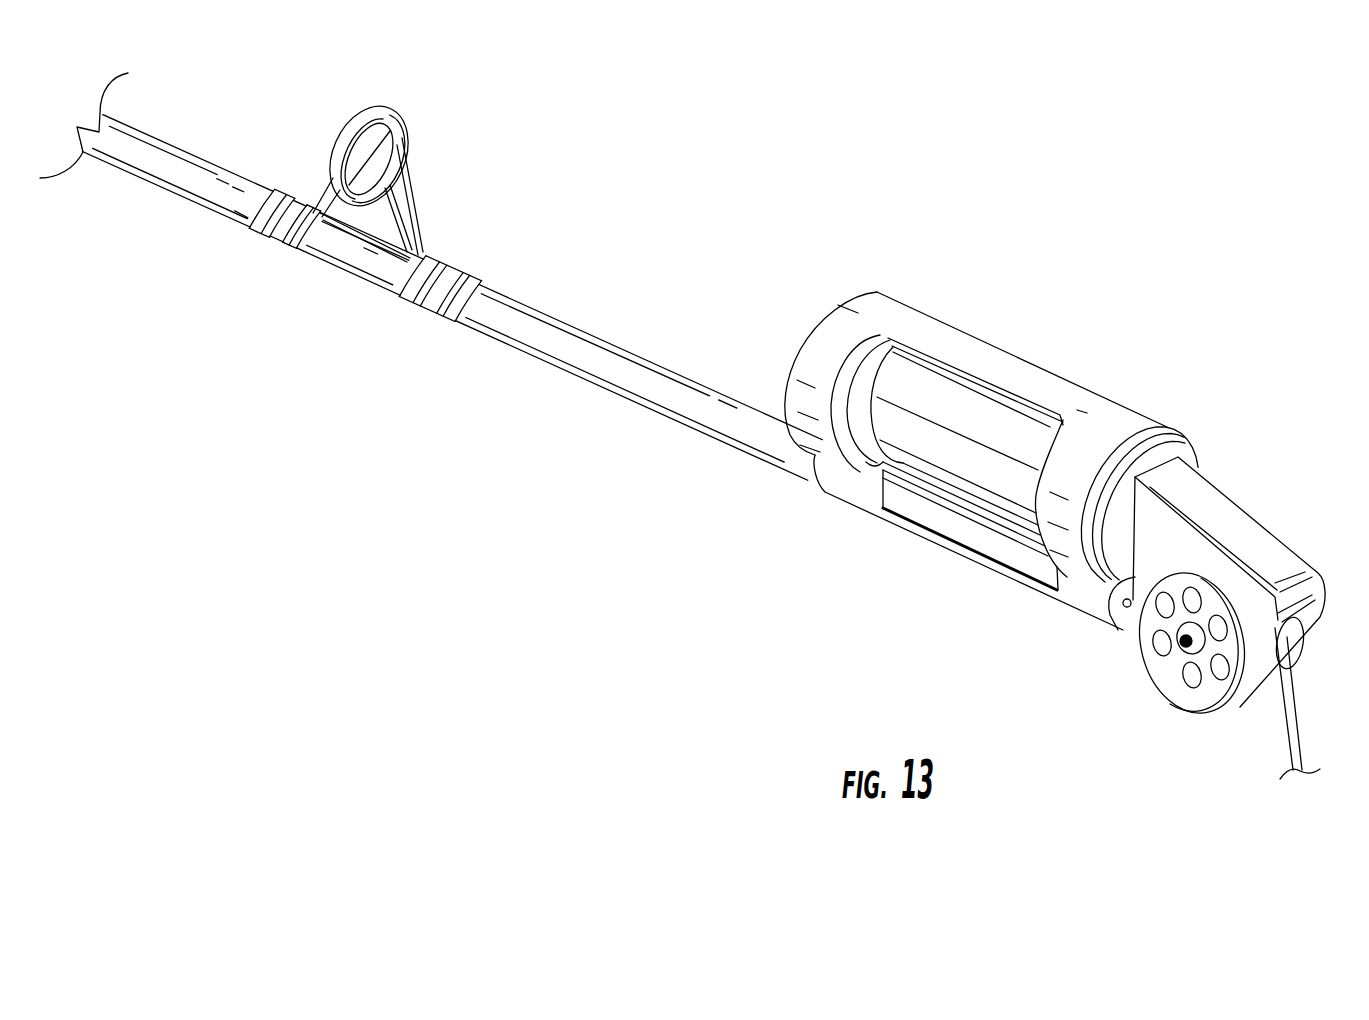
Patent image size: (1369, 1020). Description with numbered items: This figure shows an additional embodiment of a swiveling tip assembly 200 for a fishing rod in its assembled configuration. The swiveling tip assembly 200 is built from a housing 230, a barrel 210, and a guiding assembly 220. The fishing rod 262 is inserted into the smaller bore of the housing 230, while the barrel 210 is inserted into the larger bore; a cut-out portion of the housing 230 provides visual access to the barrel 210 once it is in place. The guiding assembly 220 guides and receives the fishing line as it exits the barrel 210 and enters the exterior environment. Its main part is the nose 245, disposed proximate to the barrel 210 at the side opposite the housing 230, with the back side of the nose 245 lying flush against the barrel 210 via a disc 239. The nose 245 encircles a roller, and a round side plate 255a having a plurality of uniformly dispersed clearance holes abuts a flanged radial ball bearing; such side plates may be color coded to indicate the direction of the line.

The swiveling tip assembly 200 is at (988, 316).
The barrel 210 is at (973, 410).
The guiding assembly 220 is at (1275, 517).
The housing 230 is at (860, 302).
The disc 239 is at (1120, 552).
The nose 245 is at (1320, 582).
The round side plate 255a is at (1175, 660).
The fishing rod 262 is at (580, 328).